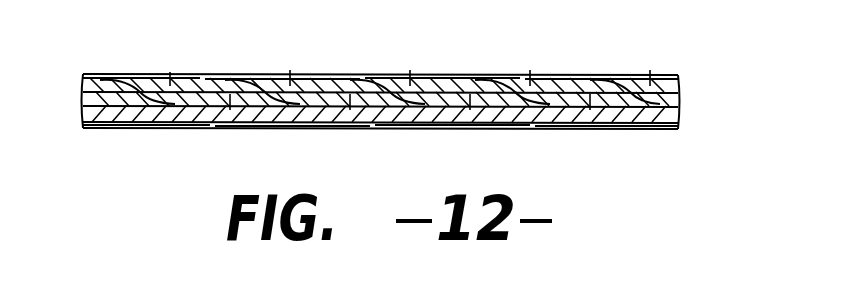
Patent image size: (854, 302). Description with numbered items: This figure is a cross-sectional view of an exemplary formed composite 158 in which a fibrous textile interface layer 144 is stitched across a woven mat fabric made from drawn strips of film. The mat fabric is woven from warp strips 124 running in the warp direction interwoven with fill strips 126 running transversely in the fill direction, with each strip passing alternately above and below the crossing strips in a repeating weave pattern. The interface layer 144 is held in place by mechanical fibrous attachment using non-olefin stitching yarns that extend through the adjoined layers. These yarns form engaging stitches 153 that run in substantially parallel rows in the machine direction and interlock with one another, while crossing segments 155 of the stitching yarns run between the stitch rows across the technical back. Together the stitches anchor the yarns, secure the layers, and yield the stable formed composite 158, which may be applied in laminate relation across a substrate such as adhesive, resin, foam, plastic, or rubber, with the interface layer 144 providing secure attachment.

The fill strips 126 is at (163, 84).
The warp strips 124 is at (292, 86).
The crossing segments 155 is at (386, 80).
The engaging stitches 153 is at (545, 131).
The interface layer 144 is at (648, 120).
The formed composite 158 is at (692, 82).